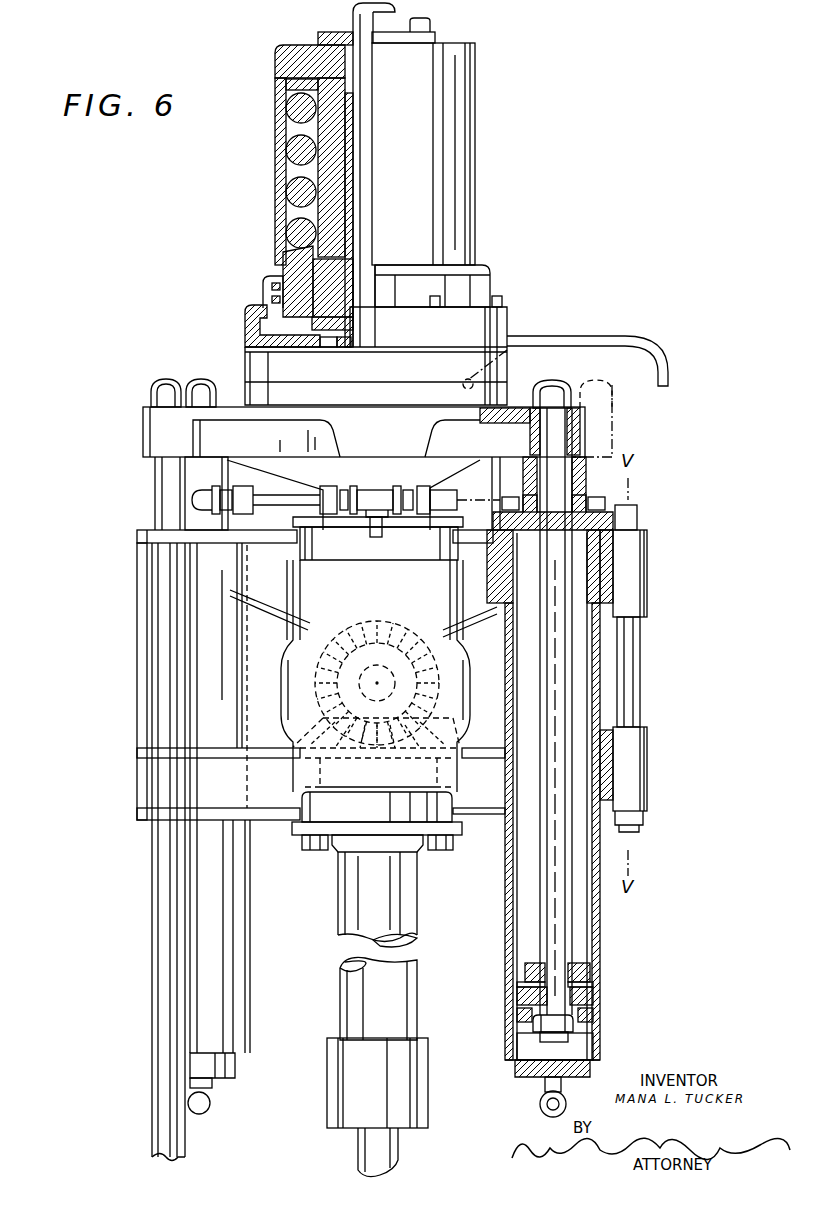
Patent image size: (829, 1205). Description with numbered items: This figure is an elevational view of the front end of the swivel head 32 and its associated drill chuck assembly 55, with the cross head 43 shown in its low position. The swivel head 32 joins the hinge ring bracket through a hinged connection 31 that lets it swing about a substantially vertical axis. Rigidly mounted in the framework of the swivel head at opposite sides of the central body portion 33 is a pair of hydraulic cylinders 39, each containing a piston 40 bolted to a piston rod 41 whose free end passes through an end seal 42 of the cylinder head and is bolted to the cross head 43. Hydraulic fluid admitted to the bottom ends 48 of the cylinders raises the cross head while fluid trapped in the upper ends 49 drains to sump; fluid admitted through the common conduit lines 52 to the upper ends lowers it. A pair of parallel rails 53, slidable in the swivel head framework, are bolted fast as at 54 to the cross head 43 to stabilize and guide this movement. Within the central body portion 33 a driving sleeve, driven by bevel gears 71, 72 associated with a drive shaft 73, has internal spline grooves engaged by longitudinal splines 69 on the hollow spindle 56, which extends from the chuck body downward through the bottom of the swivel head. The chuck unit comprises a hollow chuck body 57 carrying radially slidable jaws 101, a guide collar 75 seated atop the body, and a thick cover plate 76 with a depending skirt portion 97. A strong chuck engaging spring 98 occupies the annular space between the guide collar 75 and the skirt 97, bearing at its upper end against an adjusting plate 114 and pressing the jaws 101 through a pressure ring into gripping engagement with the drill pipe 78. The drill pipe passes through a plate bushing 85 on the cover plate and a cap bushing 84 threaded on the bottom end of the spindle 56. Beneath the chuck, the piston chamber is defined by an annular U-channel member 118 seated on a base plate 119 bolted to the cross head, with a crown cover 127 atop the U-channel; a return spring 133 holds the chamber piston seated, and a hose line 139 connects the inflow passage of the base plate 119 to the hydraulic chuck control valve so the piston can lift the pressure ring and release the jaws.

The plate bushing 85 is at (338, 32).
The drill chuck assembly 55 is at (482, 180).
The cover plate 76 is at (275, 56).
The adjusting plate 114 is at (285, 85).
The chuck engaging spring 98 is at (285, 150).
The guide collar 75 is at (345, 132).
The skirt portion 97 is at (283, 252).
The chuck jaws 101 is at (348, 275).
The return spring 133 is at (268, 283).
The U-channel member 118 is at (245, 326).
The chuck body 57 is at (330, 346).
The crown cover 127 is at (512, 303).
The base plate 119 is at (395, 392).
The hose line 139 is at (623, 334).
The bolts 54 is at (151, 398).
The cross head 43 is at (143, 428).
The end seal 42 is at (523, 490).
The common conduit lines 52 is at (387, 487).
The swivel head 32 is at (137, 530).
The hinged connection 31 is at (650, 564).
The upper ends of cylinders 49 is at (586, 545).
The bevel gear 71 is at (424, 624).
The central body portion 33 is at (285, 662).
The drive shaft 73 is at (396, 683).
The bevel gear 72 is at (304, 733).
The rails 53 is at (152, 897).
The hydraulic cylinders 39 is at (240, 900).
The piston rod 41 is at (548, 925).
The piston 40 is at (600, 984).
The spindle 56 is at (338, 938).
The splines 69 is at (345, 1004).
The cap bushing 84 is at (430, 1078).
The drill pipe 78 is at (358, 1155).
The bottom ends of cylinders 48 is at (577, 1038).